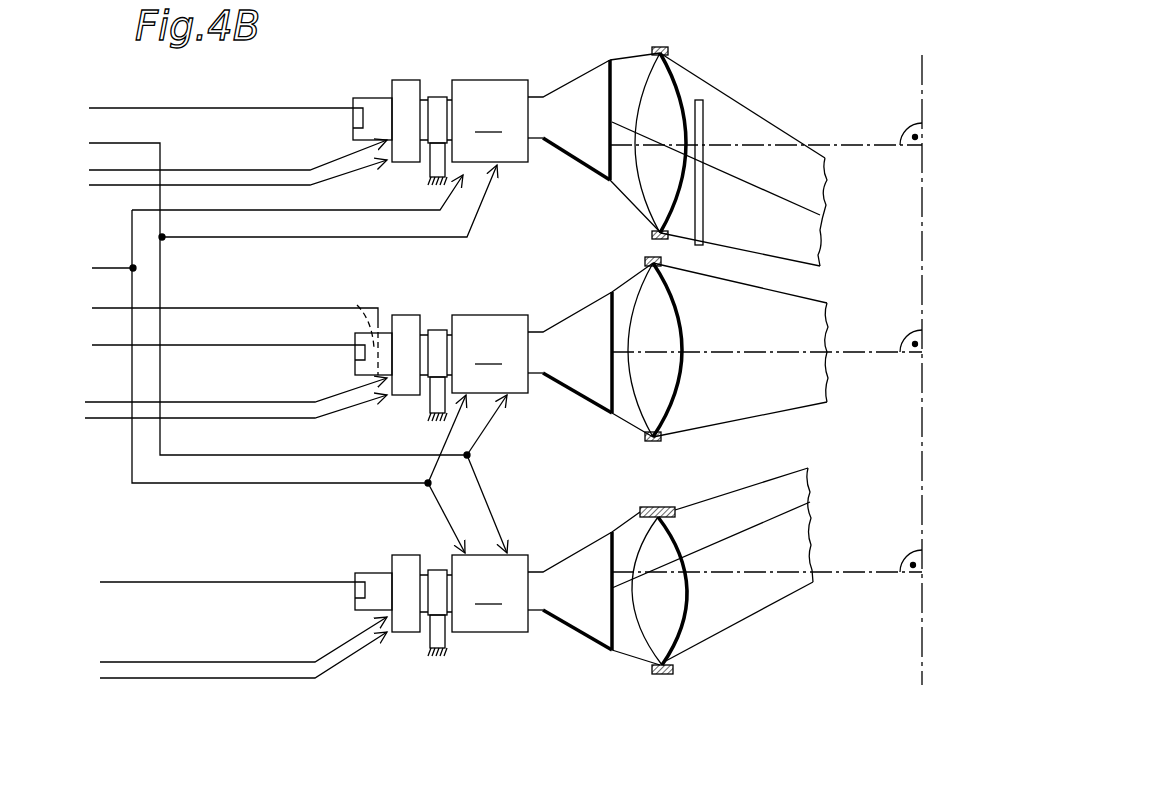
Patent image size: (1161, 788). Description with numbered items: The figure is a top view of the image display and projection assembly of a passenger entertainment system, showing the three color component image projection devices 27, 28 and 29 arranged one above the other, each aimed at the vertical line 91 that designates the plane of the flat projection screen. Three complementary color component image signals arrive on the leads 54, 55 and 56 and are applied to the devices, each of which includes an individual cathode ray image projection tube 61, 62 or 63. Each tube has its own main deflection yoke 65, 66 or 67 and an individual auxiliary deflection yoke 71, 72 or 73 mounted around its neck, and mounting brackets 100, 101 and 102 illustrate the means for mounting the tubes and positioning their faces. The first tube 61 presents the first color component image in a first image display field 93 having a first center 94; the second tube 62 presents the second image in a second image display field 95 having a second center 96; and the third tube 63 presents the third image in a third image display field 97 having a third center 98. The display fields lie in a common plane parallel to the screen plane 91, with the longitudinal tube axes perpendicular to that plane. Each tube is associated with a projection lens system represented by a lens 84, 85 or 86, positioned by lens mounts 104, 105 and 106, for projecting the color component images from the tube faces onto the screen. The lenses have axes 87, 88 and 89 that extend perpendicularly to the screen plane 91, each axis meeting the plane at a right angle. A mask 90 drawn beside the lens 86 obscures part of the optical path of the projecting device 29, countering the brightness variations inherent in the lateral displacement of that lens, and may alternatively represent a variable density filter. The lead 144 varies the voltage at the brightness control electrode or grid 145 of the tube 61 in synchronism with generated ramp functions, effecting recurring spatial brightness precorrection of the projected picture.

The lead 54 is at (276, 107).
The lead 55 is at (298, 345).
The lead 56 is at (307, 582).
The auxiliary deflection yoke 73 is at (412, 80).
The auxiliary deflection yoke 71 is at (405, 315).
The auxiliary deflection yoke 72 is at (418, 530).
The main deflection yoke 67 is at (490, 121).
The main deflection yoke 65 is at (490, 354).
The main deflection yoke 66 is at (490, 593).
The color component image projection device 29 is at (583, 104).
The color component image projection device 27 is at (562, 341).
The color component image projection device 28 is at (577, 596).
The cathode ray image projection tube 63 is at (588, 162).
The cathode ray image projection tube 61 is at (574, 397).
The cathode ray image projection tube 62 is at (583, 640).
The third image display field 97 is at (627, 58).
The first image display field 93 is at (617, 306).
The second image display field 95 is at (621, 633).
The third lens 86 is at (676, 94).
The first lens 84 is at (680, 320).
The second lens 85 is at (672, 638).
The lens mount 106 is at (661, 50).
The lens mount 104 is at (643, 258).
The first center 94 is at (621, 370).
The lens mount 105 is at (660, 675).
The third center 98 is at (617, 118).
The second center 96 is at (618, 594).
The mask 90 is at (707, 219).
The third lens axis 89 is at (875, 144).
The first lens axis 87 is at (862, 352).
The second lens axis 88 is at (838, 571).
The screen plane 91 is at (917, 642).
The mounting bracket 102 is at (427, 170).
The mounting bracket 100 is at (430, 407).
The mounting bracket 101 is at (430, 648).
The lead 144 is at (262, 308).
The brightness control electrode 145 is at (349, 311).